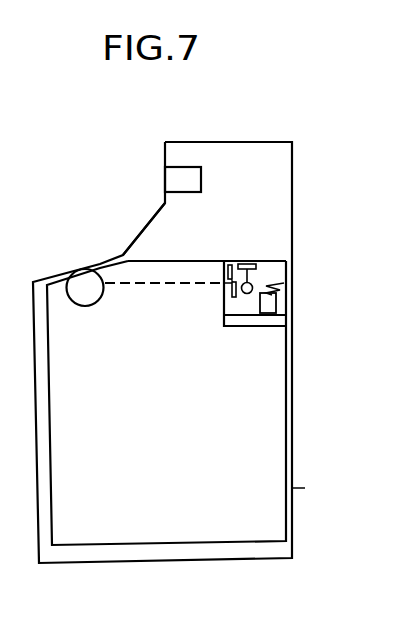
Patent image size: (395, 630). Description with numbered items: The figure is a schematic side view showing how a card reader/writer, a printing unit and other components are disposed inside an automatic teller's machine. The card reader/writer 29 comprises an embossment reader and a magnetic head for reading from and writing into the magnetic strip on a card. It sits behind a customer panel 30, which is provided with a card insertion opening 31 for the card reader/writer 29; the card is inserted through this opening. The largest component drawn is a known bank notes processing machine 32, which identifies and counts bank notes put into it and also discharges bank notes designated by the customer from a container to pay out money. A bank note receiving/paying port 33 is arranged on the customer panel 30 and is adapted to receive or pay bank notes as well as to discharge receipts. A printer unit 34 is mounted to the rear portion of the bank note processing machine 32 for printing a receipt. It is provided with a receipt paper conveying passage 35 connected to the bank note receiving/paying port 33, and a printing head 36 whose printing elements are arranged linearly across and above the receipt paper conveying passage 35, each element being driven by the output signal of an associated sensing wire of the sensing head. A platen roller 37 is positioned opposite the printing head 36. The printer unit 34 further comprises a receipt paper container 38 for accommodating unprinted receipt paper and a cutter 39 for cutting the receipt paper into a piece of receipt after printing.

The card reader/writer 29 is at (181, 173).
The customer panel 30 is at (147, 235).
The card insertion opening 31 is at (165, 180).
The bank notes processing machine 32 is at (140, 528).
The bank note receiving/paying port 33 is at (88, 275).
The printer unit 34 is at (280, 270).
The receipt paper conveying passage 35 is at (178, 284).
The printing head 36 is at (258, 265).
The platen roller 37 is at (247, 294).
The receipt paper container 38 is at (276, 299).
The cutter 39 is at (231, 263).